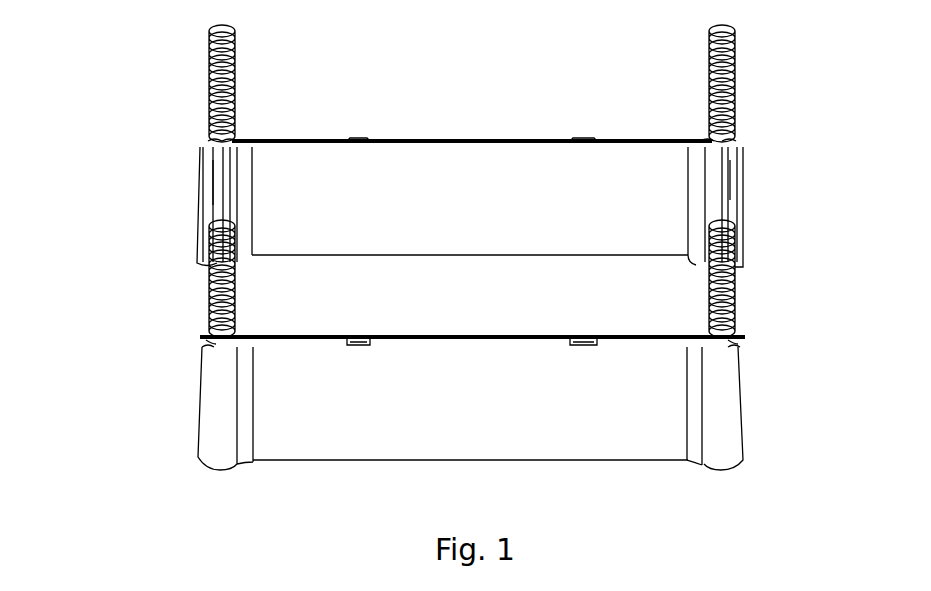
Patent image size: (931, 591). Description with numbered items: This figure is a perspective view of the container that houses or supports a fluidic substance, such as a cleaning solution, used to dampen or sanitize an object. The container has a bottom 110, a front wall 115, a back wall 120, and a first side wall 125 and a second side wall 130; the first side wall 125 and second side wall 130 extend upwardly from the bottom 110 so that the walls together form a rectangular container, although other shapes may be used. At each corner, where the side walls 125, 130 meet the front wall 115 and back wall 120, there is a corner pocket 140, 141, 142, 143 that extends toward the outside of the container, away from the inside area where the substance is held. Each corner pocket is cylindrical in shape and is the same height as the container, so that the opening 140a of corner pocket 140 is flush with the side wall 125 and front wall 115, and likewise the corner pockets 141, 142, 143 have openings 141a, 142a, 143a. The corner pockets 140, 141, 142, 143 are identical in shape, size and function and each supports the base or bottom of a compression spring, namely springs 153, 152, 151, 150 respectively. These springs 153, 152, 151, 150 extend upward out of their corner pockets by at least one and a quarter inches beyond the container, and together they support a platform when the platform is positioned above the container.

The bottom 110 is at (421, 307).
The front wall 115 is at (470, 408).
The back wall 120 is at (470, 202).
The first side wall 125 is at (224, 210).
The second side wall 130 is at (718, 202).
The corner pocket 140 is at (200, 353).
The opening 140a is at (205, 343).
The corner pocket 141 is at (240, 145).
The opening 141a is at (212, 139).
The corner pocket 142 is at (700, 133).
The opening 142a is at (743, 142).
The corner pocket 143 is at (741, 348).
The opening 143a is at (742, 338).
The spring 150 is at (741, 277).
The spring 151 is at (743, 61).
The spring 152 is at (242, 65).
The spring 153 is at (206, 272).